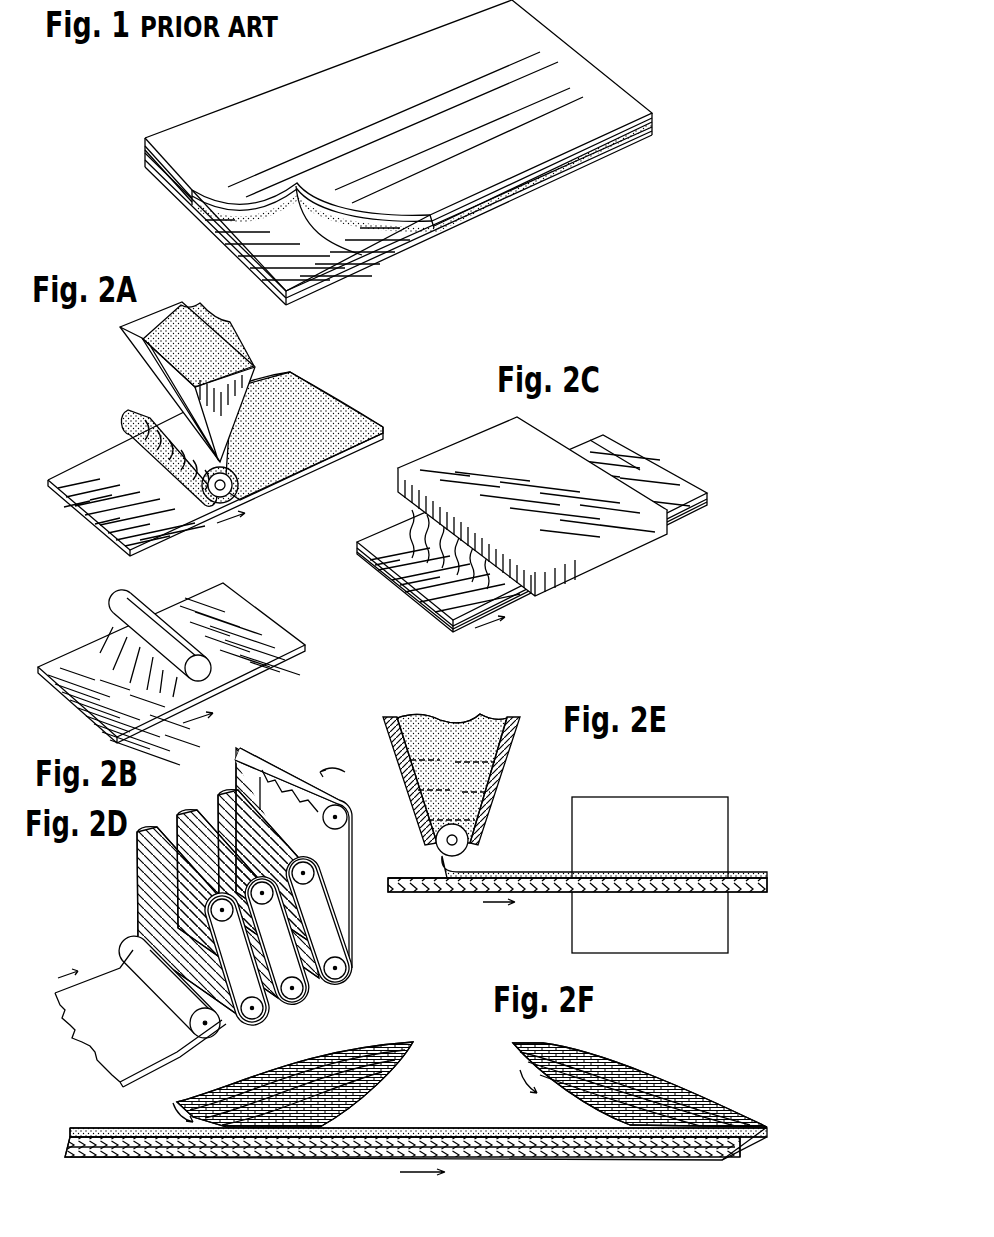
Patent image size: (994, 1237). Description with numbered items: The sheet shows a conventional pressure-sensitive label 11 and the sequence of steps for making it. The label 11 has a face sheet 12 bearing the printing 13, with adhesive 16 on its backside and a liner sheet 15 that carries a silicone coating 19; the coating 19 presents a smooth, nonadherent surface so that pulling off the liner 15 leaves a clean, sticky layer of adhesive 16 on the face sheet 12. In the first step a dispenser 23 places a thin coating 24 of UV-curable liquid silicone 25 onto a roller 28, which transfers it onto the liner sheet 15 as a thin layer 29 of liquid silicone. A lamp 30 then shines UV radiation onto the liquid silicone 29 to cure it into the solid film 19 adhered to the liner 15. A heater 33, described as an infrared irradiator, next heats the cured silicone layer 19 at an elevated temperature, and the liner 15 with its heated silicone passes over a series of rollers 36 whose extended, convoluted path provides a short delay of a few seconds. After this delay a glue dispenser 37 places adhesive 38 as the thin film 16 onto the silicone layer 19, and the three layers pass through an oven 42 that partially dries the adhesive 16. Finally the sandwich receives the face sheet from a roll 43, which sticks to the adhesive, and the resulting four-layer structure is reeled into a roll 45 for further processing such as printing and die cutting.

In FIG. 1, the pressure-sensitive label 11 is at (128, 138).
In FIG. 1, the face sheet 12 is at (632, 106).
In FIG. 2F, the face sheet 12 is at (415, 1128).
In FIG. 1, the printing 13 is at (463, 63).
In FIG. 1, the liner sheet 15 is at (350, 272).
In FIG. 2A, the liner sheet 15 is at (92, 516).
In FIG. 2C, the liner sheet 15 is at (686, 523).
In FIG. 2D, the liner sheet 15 is at (186, 1057).
In FIG. 2E, the liner sheet 15 is at (447, 893).
In FIG. 2F, the liner sheet 15 is at (68, 1148).
In FIG. 1, the adhesive 16 is at (388, 252).
In FIG. 2E, the adhesive 16 is at (520, 872).
In FIG. 2F, the adhesive 16 is at (457, 1128).
In FIG. 1, the silicone coating 19 is at (200, 220).
In FIG. 2B, the silicone coating 19 is at (260, 613).
In FIG. 2C, the silicone coating 19 is at (657, 474).
In FIG. 2D, the silicone coating 19 is at (90, 1045).
In FIG. 2E, the silicone coating 19 is at (412, 878).
In FIG. 2F, the silicone coating 19 is at (70, 1132).
In FIG. 2A, the dispenser 23 is at (137, 352).
In FIG. 2A, the coating of silicone 24 is at (130, 418).
In FIG. 2A, the UV-curable liquid silicone 25 is at (193, 335).
In FIG. 2A, the roller 28 is at (236, 490).
In FIG. 2A, the layer of liquid silicone 29 is at (328, 395).
In FIG. 2B, the layer of liquid silicone 29 is at (62, 652).
In FIG. 2B, the lamp 30 is at (143, 604).
In FIG. 2C, the heated platen 33 is at (540, 442).
In FIG. 2D, the rollers 36 is at (262, 893).
In FIG. 2E, the glue dispenser 37 is at (517, 738).
In FIG. 2E, the adhesive 38 is at (452, 720).
In FIG. 2E, the oven 42 is at (668, 797).
In FIG. 2F, the roll 43 is at (365, 1032).
In FIG. 2F, the roll 45 is at (696, 1054).